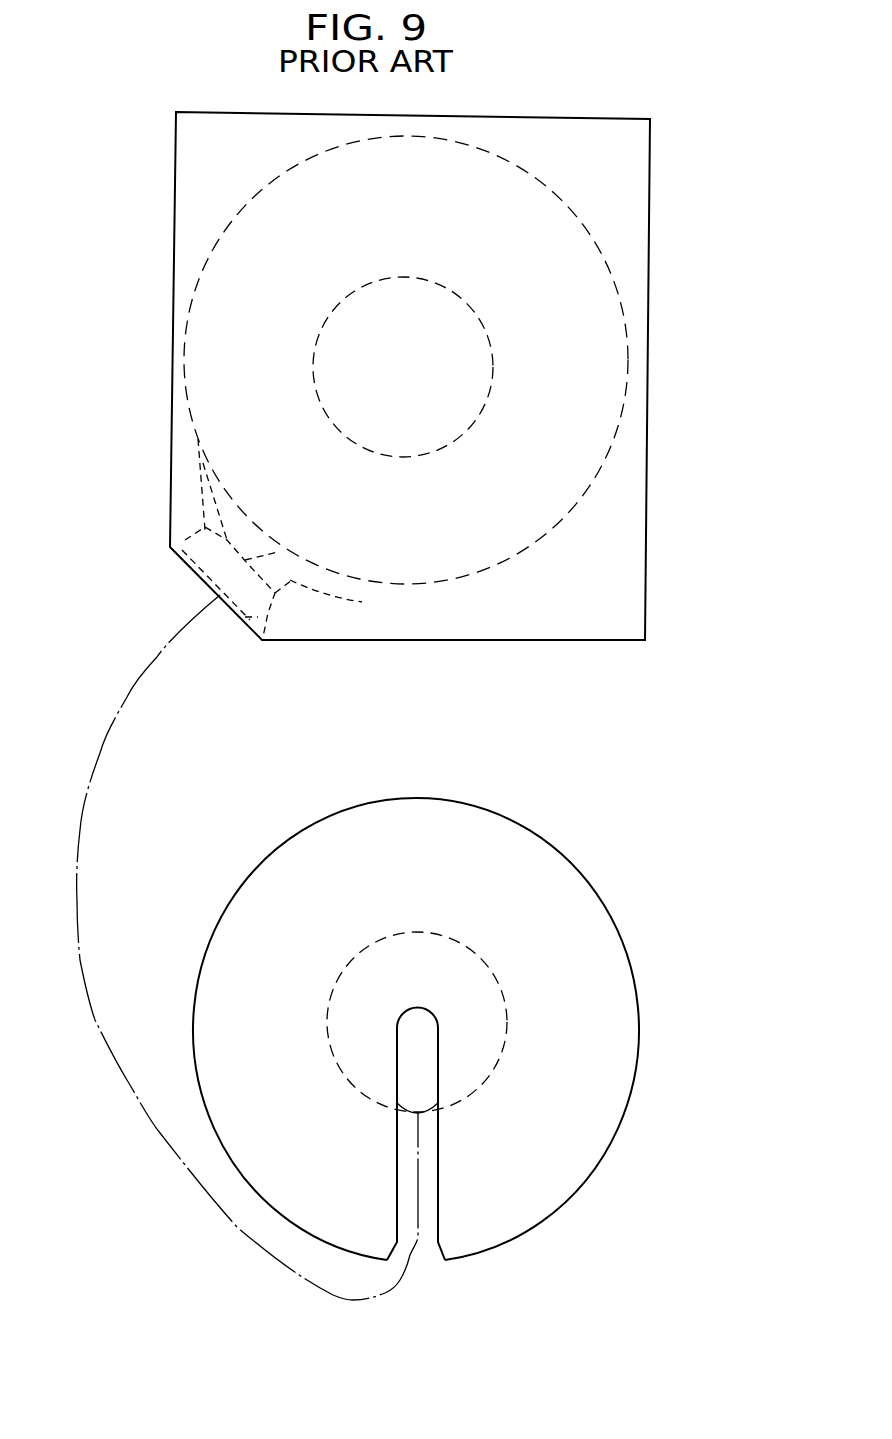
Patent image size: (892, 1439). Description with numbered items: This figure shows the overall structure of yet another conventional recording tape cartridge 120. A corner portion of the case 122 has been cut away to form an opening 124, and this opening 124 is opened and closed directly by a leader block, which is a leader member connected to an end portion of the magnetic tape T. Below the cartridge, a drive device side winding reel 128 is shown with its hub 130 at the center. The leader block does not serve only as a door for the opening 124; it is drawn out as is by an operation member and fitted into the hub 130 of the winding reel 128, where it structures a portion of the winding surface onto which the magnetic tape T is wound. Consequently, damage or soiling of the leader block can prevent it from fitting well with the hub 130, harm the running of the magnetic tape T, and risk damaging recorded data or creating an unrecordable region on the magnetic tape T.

The recording tape cartridge 120 is at (497, 385).
The case 122 is at (717, 157).
The opening 124 is at (260, 630).
The winding reel 128 is at (633, 945).
The hub 130 is at (470, 946).
The magnetic tape T is at (100, 752).